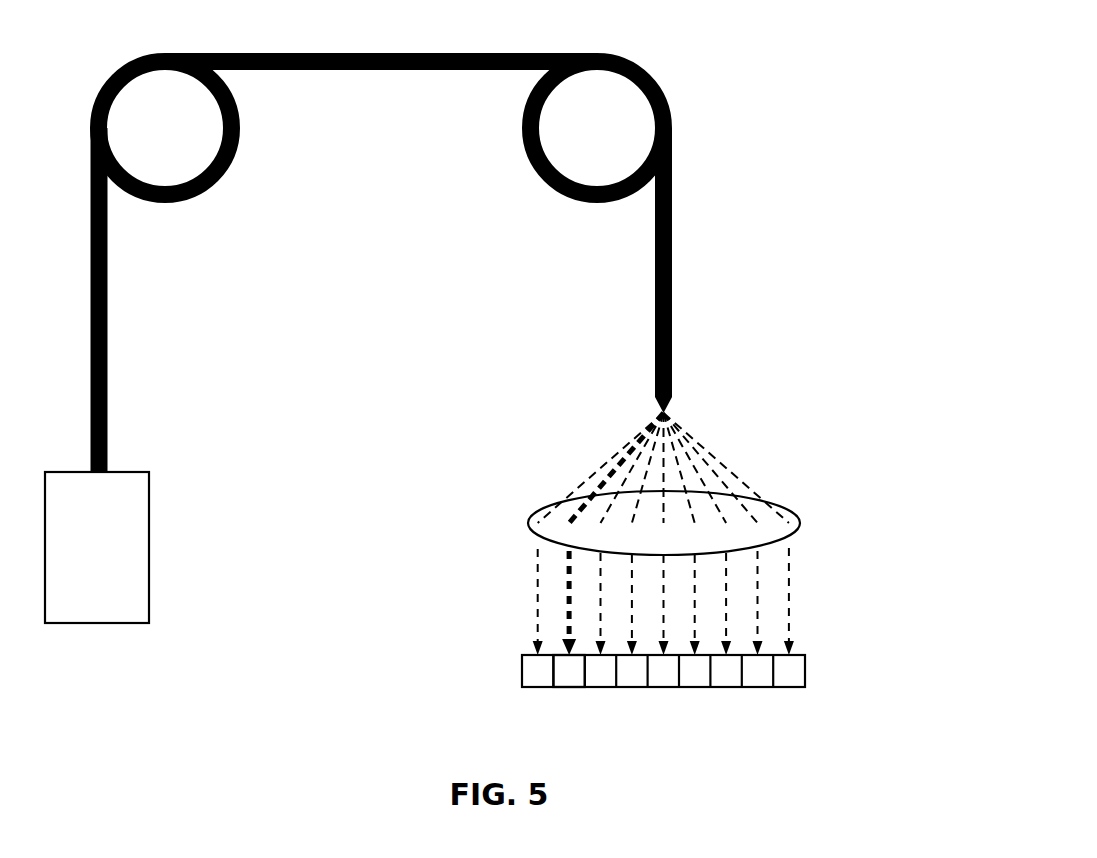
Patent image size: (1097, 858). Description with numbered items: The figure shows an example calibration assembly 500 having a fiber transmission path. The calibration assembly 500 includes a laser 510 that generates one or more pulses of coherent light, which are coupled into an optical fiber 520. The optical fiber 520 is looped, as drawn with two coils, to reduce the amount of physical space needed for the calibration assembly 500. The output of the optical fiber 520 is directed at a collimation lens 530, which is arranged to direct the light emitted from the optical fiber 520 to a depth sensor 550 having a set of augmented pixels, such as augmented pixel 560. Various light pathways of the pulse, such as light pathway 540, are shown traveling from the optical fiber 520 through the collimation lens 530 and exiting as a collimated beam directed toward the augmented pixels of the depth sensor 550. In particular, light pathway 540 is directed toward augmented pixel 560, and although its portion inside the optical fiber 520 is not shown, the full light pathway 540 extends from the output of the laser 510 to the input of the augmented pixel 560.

The calibration assembly 500 is at (858, 66).
The laser 510 is at (77, 574).
The optical fiber 520 is at (105, 300).
The collimation lens 530 is at (528, 523).
The light pathway 540 is at (603, 478).
The depth sensor 550 is at (805, 675).
The augmented pixel 560 is at (568, 687).